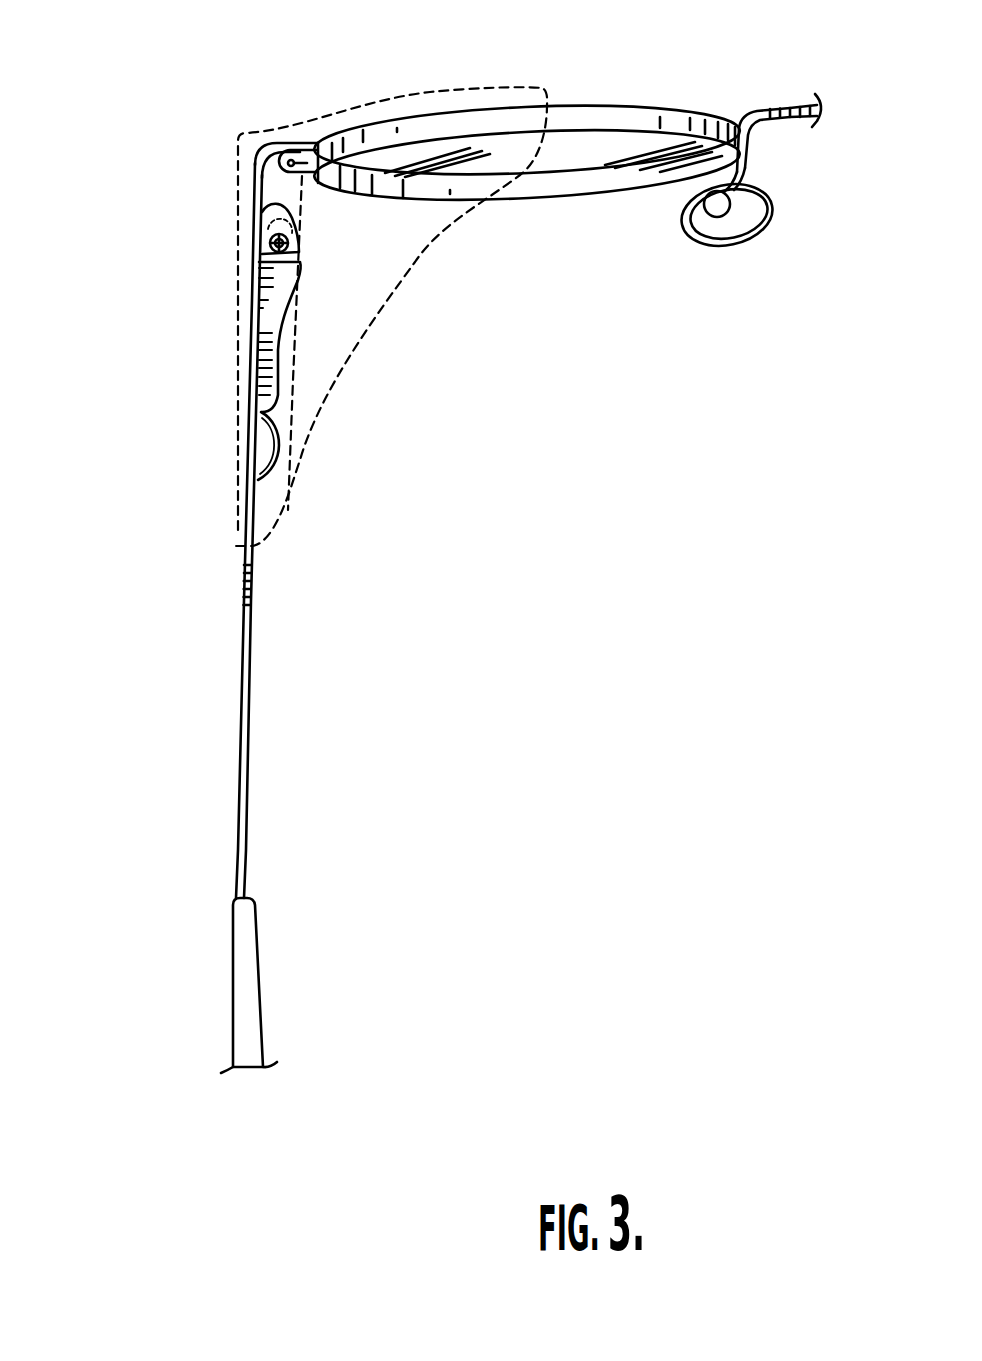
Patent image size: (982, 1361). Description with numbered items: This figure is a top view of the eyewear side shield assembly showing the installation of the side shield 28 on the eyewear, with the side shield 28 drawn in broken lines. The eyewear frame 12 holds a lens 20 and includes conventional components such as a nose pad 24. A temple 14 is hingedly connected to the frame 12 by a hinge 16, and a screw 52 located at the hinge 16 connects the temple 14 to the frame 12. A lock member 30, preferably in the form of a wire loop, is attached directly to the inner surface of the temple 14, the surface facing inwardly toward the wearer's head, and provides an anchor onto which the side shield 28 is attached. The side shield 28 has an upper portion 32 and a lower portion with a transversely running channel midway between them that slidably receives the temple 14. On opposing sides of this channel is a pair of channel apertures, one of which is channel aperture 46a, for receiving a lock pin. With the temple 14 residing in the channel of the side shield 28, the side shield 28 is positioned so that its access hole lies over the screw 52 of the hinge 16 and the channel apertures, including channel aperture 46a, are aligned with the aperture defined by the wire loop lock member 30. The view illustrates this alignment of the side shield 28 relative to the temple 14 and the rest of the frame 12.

The eyewear frame 12 is at (585, 118).
The temple 14 is at (242, 787).
The hinge 16 is at (262, 218).
The lens 20 is at (638, 150).
The nose pad 24 is at (745, 218).
The side shield 28 is at (230, 488).
The lock member 30 is at (262, 486).
The upper portion 32 is at (388, 228).
The channel aperture 46a is at (252, 482).
The screw 52 is at (300, 252).